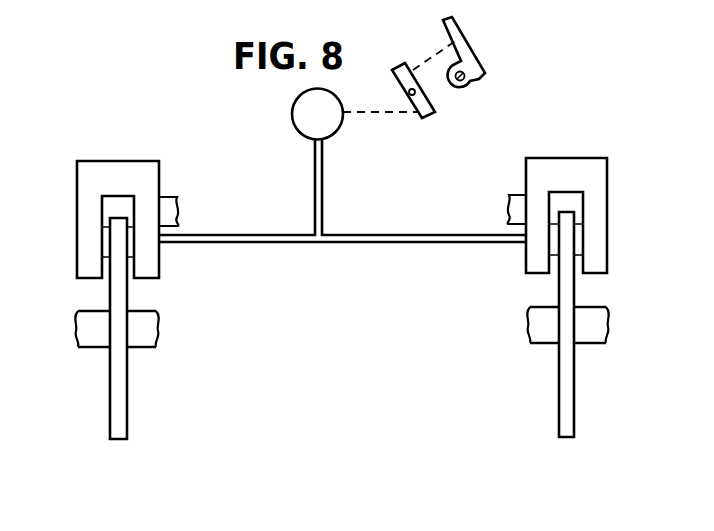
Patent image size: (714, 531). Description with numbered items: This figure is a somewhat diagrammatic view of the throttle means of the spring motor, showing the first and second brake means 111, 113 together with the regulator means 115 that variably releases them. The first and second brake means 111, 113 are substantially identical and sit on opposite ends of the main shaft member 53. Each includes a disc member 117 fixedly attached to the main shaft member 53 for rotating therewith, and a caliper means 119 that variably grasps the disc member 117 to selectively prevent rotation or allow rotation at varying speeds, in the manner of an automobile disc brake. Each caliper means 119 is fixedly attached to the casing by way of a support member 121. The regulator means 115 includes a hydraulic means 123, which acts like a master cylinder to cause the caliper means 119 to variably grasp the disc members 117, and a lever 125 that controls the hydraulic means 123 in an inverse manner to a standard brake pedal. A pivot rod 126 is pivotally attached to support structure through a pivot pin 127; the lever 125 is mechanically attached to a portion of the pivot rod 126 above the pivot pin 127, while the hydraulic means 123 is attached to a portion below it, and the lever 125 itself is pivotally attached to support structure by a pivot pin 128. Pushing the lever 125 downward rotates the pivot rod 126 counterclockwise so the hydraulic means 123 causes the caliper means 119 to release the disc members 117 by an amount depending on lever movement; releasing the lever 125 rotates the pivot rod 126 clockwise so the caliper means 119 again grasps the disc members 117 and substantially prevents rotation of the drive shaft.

The first brake means 111 is at (133, 118).
The second brake means 113 is at (621, 130).
The regulator means 115 is at (416, 32).
The disc member 117 is at (120, 417).
The caliper means 119 is at (88, 183).
The support member 121 is at (167, 210).
The hydraulic means 123 is at (327, 128).
The lever 125 is at (460, 40).
The pivot rod 126 is at (425, 113).
The pivot pin 127 is at (415, 91).
The pivot pin 128 is at (467, 82).
The main shaft member 53 is at (143, 333).